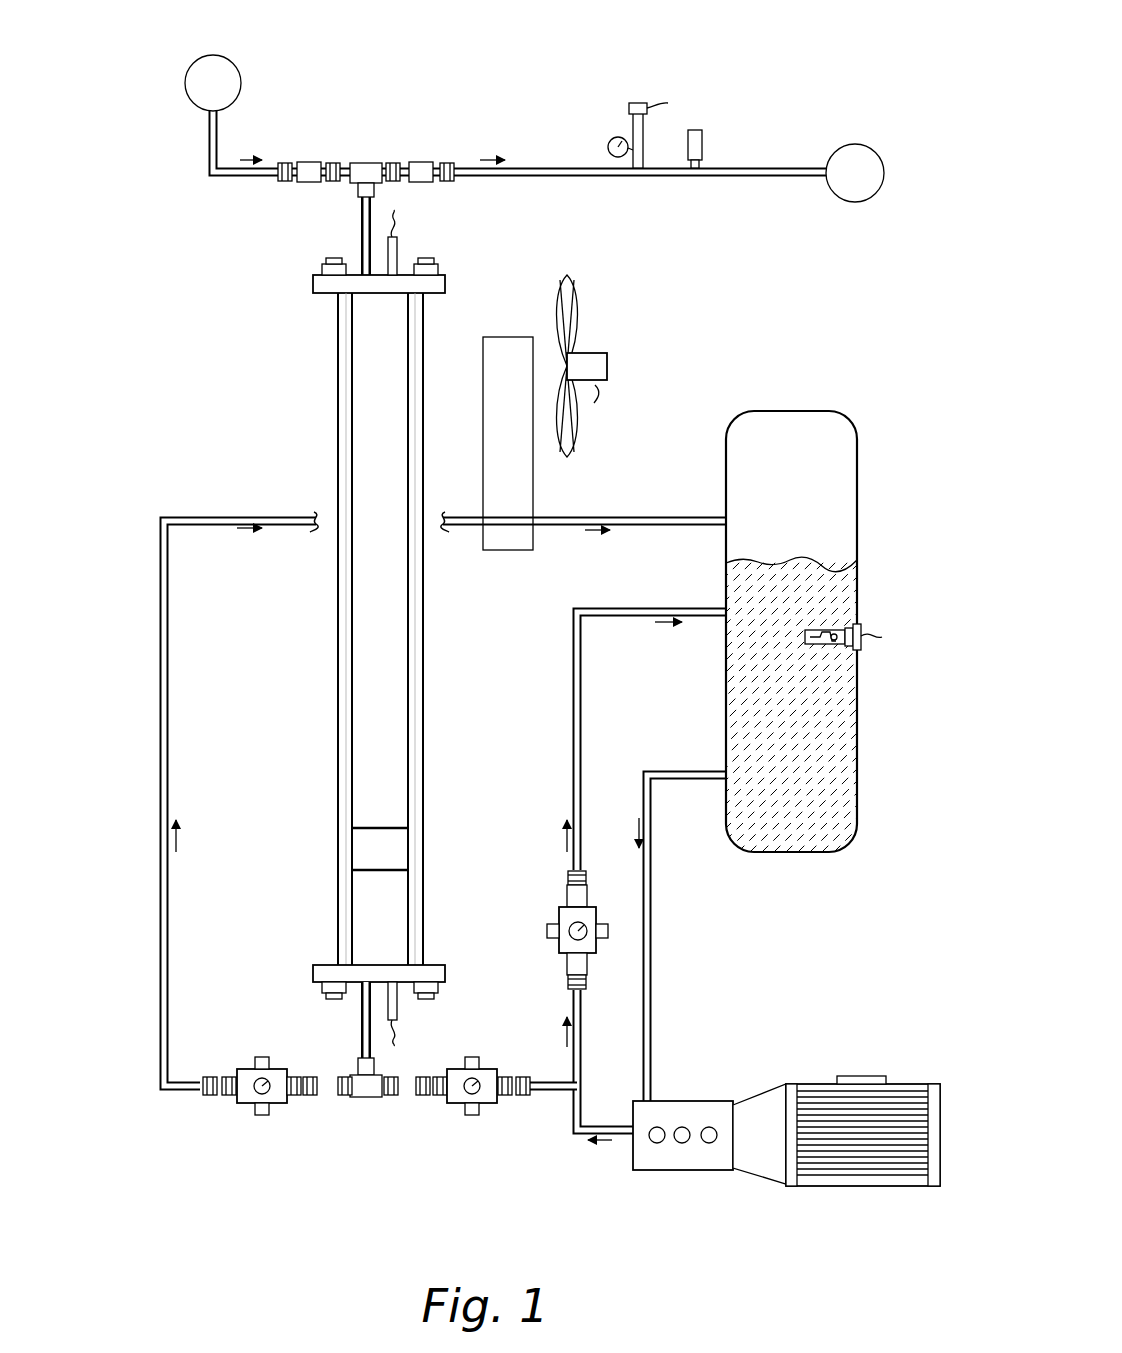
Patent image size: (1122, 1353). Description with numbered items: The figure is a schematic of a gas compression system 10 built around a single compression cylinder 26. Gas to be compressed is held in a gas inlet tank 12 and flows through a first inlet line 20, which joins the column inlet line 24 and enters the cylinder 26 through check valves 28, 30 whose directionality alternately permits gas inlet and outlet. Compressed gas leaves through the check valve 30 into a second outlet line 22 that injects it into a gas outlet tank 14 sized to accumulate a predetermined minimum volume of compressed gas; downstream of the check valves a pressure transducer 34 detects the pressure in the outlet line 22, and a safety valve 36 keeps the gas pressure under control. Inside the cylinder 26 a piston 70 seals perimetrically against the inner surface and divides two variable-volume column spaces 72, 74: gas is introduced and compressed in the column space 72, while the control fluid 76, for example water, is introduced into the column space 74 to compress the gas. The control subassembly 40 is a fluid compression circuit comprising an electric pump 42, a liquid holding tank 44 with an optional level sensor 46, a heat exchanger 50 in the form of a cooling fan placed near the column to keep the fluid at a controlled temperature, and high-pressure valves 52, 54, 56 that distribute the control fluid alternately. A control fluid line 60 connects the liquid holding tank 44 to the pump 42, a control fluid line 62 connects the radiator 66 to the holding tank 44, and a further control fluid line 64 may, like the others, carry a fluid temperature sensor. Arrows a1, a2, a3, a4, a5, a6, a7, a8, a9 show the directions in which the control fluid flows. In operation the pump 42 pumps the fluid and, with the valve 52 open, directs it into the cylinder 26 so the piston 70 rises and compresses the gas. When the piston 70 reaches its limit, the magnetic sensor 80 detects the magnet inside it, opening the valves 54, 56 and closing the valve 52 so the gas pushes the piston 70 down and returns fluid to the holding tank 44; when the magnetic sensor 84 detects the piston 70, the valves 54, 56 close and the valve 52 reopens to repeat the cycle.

The gas compression system 10 is at (862, 67).
The gas inlet tank 12 is at (198, 77).
The gas outlet tank 14 is at (868, 158).
The first inlet line 20 is at (210, 173).
The second outlet line 22 is at (630, 178).
The column inlet line 24 is at (362, 232).
The compression cylinder 26 is at (330, 372).
The check valve 28 is at (305, 165).
The check valve 30 is at (417, 165).
The pressure transducer 34 is at (637, 103).
The safety valve 36 is at (696, 130).
The control subassembly 40 is at (911, 848).
The electric pump 42 is at (870, 1078).
The liquid holding tank 44 is at (786, 631).
The level sensor 46 is at (862, 645).
The heat exchanger 50 is at (597, 360).
The high-pressure valve 52 is at (475, 1103).
The high-pressure valve 54 is at (252, 1103).
The high-pressure valve 56 is at (560, 920).
The control fluid line 60 is at (657, 960).
The control fluid line 62 is at (160, 660).
The control fluid line 64 is at (573, 617).
The radiator 66 is at (495, 347).
The piston 70 is at (368, 840).
The column space 72 is at (380, 560).
The column space 74 is at (380, 917).
The control fluid 76 is at (786, 704).
The magnetic sensor 80 is at (398, 248).
The magnetic sensor 84 is at (398, 1022).
The arrow a1 is at (636, 830).
The arrow a2 is at (592, 1150).
The arrow a3 is at (572, 1082).
The arrow a4 is at (180, 838).
The arrow a5 is at (246, 535).
The arrow a6 is at (598, 538).
The arrow a7 is at (535, 1011).
The arrow a8 is at (563, 836).
The arrow a9 is at (670, 628).